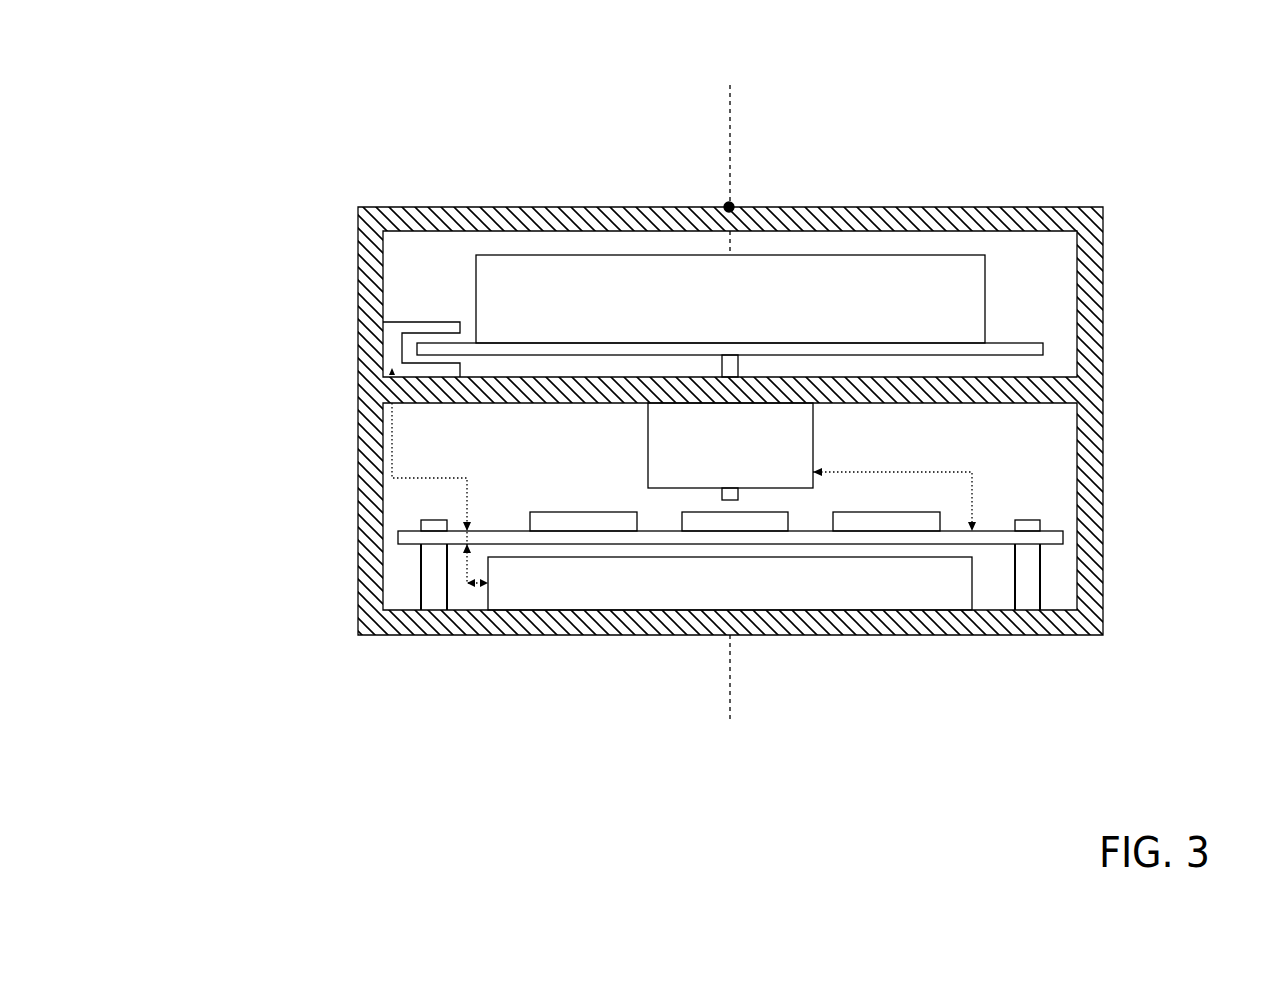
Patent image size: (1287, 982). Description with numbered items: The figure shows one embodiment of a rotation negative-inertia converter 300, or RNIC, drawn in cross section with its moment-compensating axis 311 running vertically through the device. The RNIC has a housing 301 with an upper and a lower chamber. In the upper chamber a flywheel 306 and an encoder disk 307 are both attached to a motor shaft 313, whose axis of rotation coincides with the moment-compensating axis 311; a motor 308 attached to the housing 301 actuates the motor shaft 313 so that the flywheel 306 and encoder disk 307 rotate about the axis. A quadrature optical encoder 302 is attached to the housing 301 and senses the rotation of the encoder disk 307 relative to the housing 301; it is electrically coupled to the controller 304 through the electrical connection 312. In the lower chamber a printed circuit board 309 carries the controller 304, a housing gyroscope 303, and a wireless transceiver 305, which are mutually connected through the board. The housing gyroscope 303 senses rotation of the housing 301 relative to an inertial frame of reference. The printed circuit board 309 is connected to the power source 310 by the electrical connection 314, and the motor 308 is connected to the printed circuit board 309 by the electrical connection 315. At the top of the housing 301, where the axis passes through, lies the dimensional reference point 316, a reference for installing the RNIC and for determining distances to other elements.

The rotation negative-inertia converter 300 is at (1058, 121).
The housing 301 is at (355, 243).
The quadrature optical encoder 302 is at (355, 353).
The housing gyroscope 303 is at (583, 520).
The controller 304 is at (770, 520).
The wireless transceiver 305 is at (885, 520).
The flywheel 306 is at (808, 290).
The encoder disk 307 is at (1015, 352).
The motor 308 is at (752, 440).
The printed circuit board 309 is at (1065, 537).
The power source 310 is at (947, 577).
The moment-compensating axis 311 is at (733, 148).
The electrical connection 312 is at (357, 462).
The motor shaft 313 is at (731, 355).
The electrical connection 314 is at (467, 573).
The electrical connection 315 is at (972, 495).
The dimensional reference point 316 is at (726, 204).